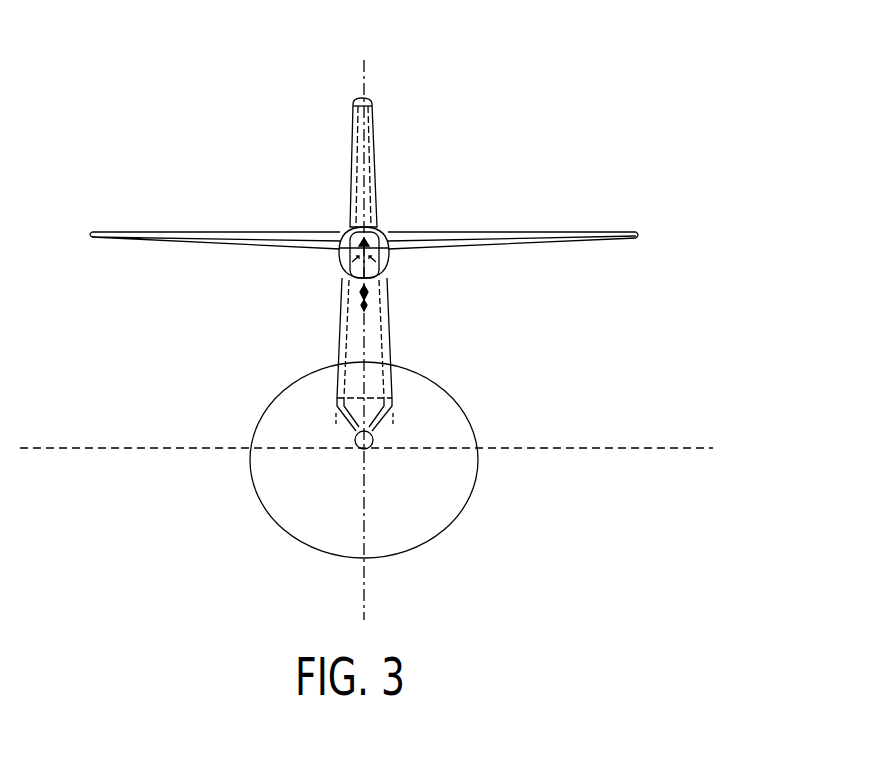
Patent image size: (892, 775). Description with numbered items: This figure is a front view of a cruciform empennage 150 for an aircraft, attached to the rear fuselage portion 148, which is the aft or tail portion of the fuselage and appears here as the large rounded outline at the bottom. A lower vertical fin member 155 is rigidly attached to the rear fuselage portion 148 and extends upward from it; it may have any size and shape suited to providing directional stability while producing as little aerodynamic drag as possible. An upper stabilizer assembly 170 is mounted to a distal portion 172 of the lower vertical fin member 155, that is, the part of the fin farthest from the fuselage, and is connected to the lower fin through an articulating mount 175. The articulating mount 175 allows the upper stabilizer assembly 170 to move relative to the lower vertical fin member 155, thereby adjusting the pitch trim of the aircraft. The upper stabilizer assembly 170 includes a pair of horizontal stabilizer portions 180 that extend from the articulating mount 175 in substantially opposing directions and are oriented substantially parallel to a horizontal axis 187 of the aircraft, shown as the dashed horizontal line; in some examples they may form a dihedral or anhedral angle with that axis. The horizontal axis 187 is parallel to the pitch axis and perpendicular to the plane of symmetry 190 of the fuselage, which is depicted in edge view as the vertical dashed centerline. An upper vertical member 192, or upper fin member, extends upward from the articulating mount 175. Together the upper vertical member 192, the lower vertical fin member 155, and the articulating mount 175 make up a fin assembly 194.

The rear fuselage portion 148 is at (443, 495).
The cruciform empennage 150 is at (268, 112).
The lower vertical fin member 155 is at (355, 337).
The upper stabilizer assembly 170 is at (465, 180).
The distal portion 172 is at (372, 295).
The articulating mount 175 is at (347, 270).
The horizontal stabilizer portions 180 is at (243, 233).
The horizontal axis 187 is at (663, 447).
The plane of symmetry 190 is at (398, 598).
The upper vertical member 192 is at (376, 155).
The fin assembly 194 is at (720, 203).